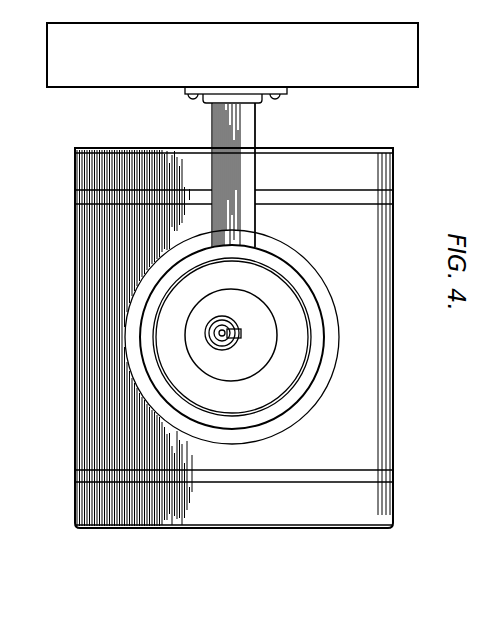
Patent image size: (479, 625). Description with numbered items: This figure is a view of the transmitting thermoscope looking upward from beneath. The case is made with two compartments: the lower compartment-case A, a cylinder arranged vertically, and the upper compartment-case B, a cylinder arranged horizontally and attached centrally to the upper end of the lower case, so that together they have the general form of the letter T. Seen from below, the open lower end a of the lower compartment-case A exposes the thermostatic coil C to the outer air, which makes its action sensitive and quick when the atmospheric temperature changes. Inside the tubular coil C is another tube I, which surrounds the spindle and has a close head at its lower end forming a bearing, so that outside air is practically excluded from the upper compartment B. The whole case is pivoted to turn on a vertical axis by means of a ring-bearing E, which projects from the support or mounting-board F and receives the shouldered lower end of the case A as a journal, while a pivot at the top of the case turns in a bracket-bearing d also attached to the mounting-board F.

The lower compartment-case A is at (234, 338).
The upper compartment-case B is at (245, 337).
The ring-bearing E is at (252, 418).
The open lower end a is at (231, 335).
The thermostatic coil C is at (222, 343).
The tube I is at (210, 332).
The mounting-board F is at (232, 135).
The bracket-bearing d is at (266, 175).